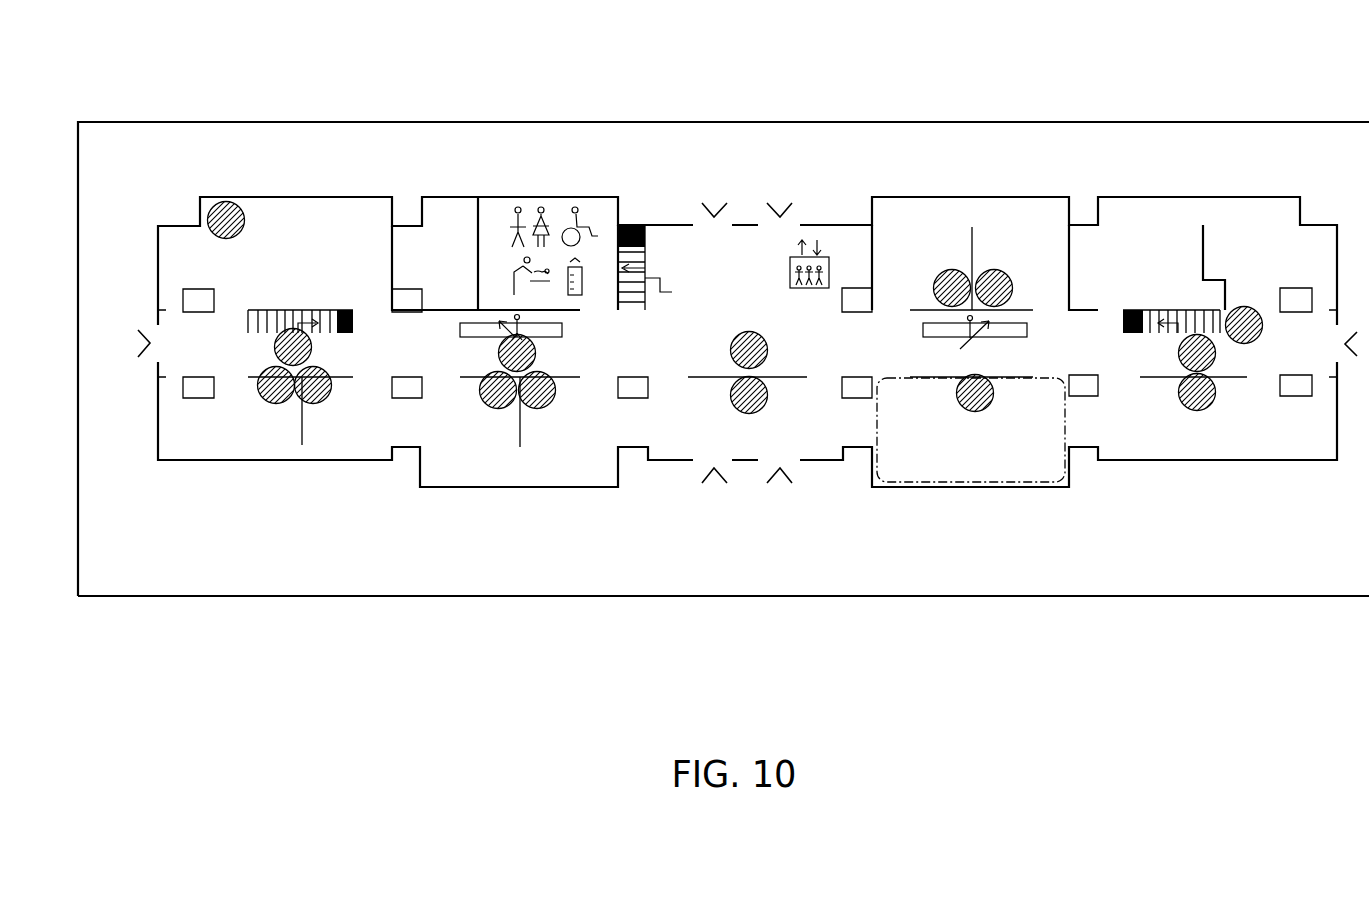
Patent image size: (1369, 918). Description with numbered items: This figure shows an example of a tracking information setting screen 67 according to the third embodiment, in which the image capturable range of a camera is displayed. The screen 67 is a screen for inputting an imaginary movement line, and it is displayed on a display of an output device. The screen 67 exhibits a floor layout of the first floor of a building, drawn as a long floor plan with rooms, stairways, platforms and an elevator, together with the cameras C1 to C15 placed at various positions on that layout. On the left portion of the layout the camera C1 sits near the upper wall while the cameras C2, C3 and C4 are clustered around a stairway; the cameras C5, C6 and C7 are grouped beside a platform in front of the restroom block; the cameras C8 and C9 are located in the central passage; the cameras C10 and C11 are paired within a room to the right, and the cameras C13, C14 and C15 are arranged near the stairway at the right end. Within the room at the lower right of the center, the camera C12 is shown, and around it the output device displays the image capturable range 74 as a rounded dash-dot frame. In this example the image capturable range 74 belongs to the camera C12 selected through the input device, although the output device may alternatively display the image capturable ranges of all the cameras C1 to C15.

The screen 67 is at (1270, 121).
The image capturable range 74 is at (1065, 430).
The camera C1 is at (233, 201).
The camera C2 is at (274, 353).
The camera C3 is at (276, 404).
The camera C4 is at (322, 400).
The camera C5 is at (499, 358).
The camera C6 is at (498, 409).
The camera C7 is at (543, 408).
The camera C8 is at (749, 331).
The camera C9 is at (749, 414).
The camera C10 is at (940, 270).
The camera C11 is at (1000, 270).
The camera C12 is at (970, 411).
The camera C13 is at (1181, 346).
The camera C14 is at (1250, 343).
The camera C15 is at (1190, 410).